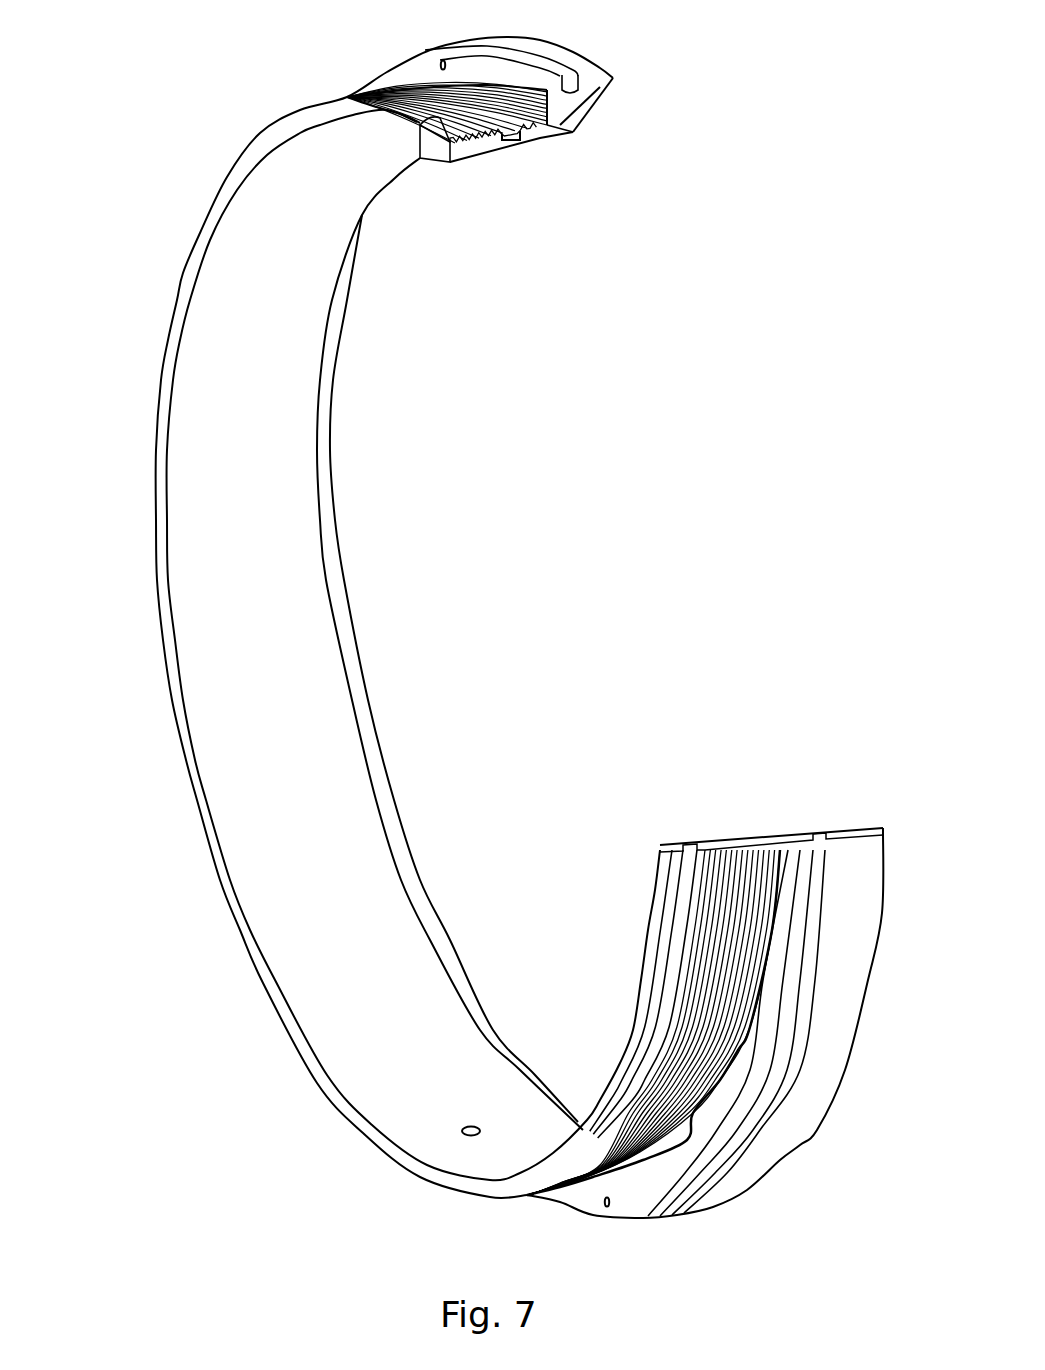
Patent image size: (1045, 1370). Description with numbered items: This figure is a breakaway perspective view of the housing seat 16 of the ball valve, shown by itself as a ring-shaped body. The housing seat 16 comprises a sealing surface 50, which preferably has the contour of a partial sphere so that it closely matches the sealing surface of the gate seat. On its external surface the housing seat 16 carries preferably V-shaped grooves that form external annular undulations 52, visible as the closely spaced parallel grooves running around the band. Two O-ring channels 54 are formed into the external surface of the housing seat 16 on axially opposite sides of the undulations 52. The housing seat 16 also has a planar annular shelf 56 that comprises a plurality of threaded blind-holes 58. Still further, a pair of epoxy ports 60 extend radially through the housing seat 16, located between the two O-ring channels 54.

The housing seat 16 is at (145, 246).
The sealing surface 50 is at (365, 732).
The external annular undulations 52 is at (410, 93).
The O-ring channels 54 is at (570, 79).
The planar annular shelf 56 is at (503, 83).
The threaded blind-holes 58 is at (430, 72).
The epoxy ports 60 is at (519, 157).